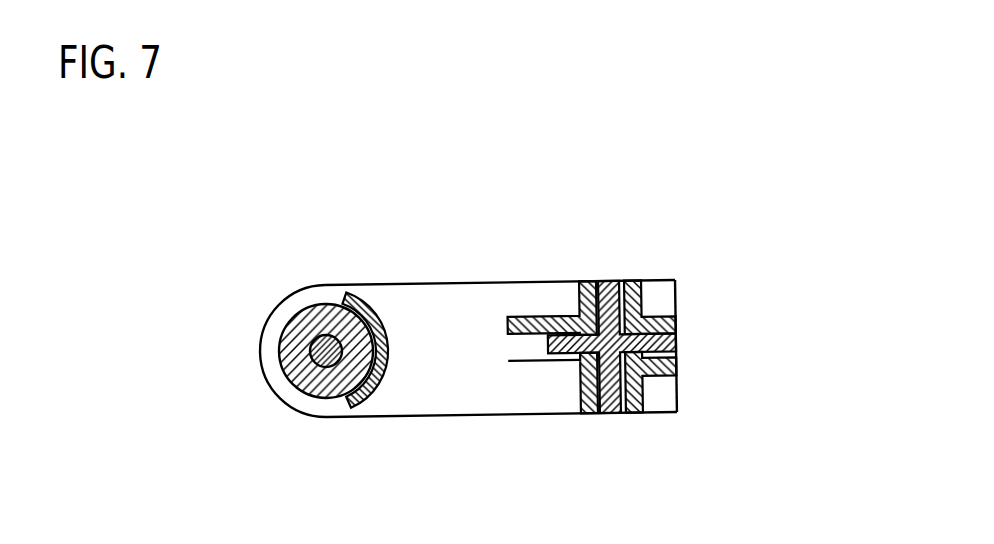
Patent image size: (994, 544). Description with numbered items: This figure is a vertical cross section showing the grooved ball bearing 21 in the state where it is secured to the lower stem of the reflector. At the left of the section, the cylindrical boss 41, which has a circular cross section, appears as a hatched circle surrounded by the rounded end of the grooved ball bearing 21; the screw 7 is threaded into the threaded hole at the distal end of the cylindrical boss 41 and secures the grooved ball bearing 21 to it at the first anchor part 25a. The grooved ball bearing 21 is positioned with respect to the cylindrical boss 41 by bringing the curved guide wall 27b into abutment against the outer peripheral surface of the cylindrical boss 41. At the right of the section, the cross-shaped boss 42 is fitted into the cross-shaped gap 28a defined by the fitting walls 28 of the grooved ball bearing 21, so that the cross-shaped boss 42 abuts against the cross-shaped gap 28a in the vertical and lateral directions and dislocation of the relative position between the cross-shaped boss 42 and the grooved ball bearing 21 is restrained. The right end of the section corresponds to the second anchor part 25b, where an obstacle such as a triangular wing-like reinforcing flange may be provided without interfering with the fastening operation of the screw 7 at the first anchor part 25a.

The screw 7 is at (322, 367).
The grooved ball bearing 21 is at (494, 283).
The first anchor part 25a is at (330, 284).
The second anchor part 25b is at (664, 281).
The guide wall 27b is at (382, 383).
The fitting walls 28 is at (530, 378).
The cross-shaped gap 28a is at (642, 300).
The cylindrical boss 41 is at (293, 389).
The cross-shaped boss 42 is at (608, 397).